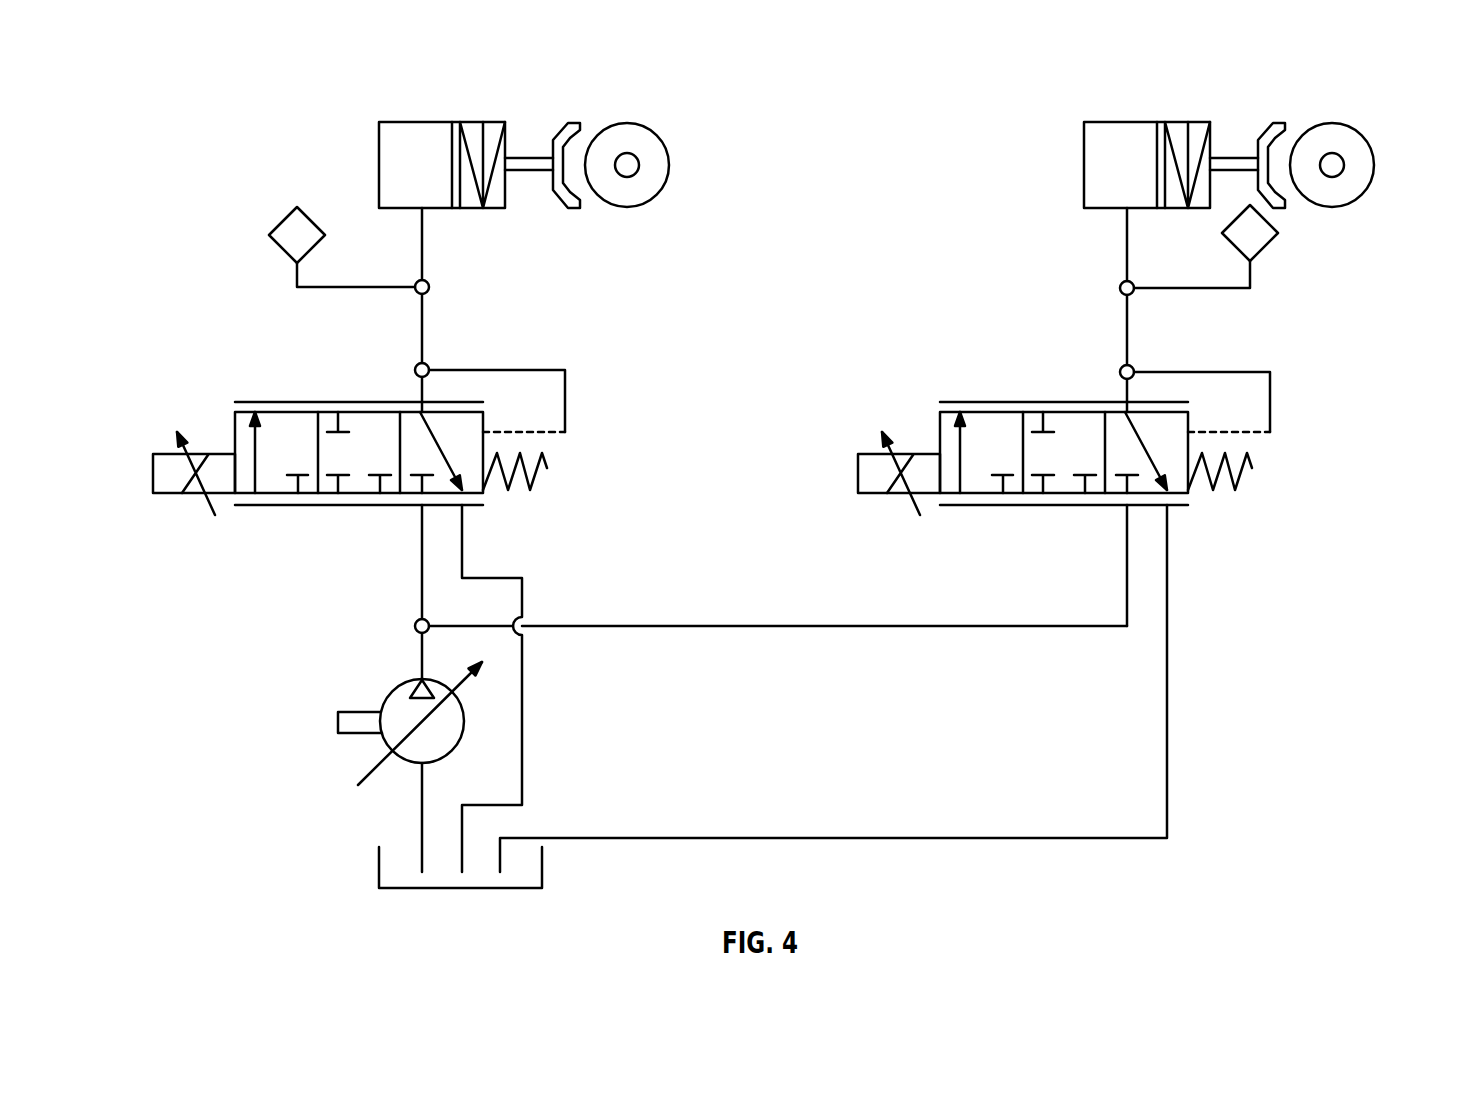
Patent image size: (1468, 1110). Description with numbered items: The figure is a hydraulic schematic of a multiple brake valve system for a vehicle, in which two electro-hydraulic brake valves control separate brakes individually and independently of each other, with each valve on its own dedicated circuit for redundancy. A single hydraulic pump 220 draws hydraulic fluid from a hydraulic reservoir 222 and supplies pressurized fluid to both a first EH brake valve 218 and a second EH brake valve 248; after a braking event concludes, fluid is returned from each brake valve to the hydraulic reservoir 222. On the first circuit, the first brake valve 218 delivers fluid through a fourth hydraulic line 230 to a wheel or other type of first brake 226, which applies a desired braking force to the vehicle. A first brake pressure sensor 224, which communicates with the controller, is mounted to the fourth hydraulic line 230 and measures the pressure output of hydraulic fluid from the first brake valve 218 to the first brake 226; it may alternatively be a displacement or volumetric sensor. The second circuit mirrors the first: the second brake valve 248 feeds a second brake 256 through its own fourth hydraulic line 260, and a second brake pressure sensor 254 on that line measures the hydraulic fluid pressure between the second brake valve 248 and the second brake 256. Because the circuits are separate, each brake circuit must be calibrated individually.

The first EH brake valve 218 is at (188, 496).
The hydraulic pump 220 is at (365, 743).
The hydraulic reservoir 222 is at (543, 880).
The first brake pressure sensor 224 is at (287, 218).
The first brake 226 is at (538, 138).
The fourth hydraulic line 230 is at (423, 252).
The second EH brake valve 248 is at (988, 507).
The second brake pressure sensor 254 is at (1230, 235).
The second brake 256 is at (1238, 127).
The fourth hydraulic line 260 is at (1125, 253).